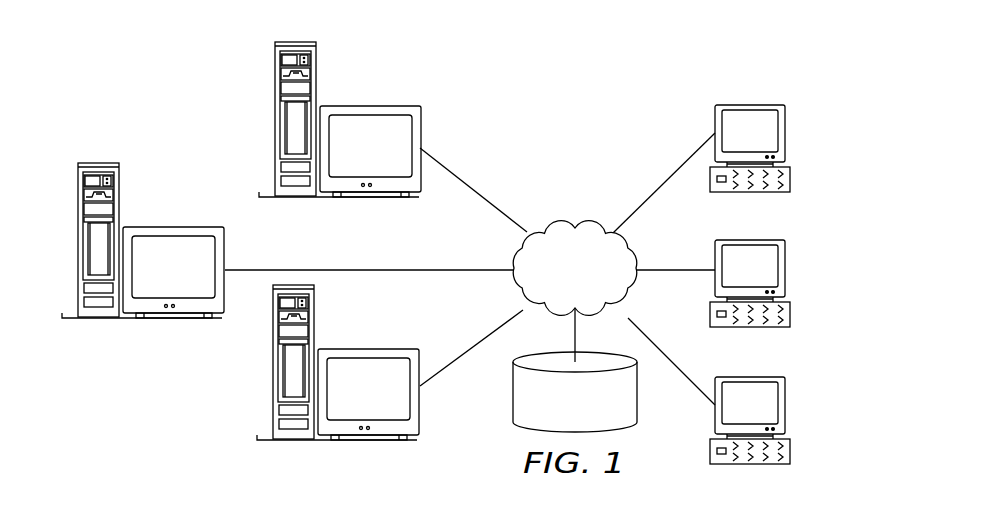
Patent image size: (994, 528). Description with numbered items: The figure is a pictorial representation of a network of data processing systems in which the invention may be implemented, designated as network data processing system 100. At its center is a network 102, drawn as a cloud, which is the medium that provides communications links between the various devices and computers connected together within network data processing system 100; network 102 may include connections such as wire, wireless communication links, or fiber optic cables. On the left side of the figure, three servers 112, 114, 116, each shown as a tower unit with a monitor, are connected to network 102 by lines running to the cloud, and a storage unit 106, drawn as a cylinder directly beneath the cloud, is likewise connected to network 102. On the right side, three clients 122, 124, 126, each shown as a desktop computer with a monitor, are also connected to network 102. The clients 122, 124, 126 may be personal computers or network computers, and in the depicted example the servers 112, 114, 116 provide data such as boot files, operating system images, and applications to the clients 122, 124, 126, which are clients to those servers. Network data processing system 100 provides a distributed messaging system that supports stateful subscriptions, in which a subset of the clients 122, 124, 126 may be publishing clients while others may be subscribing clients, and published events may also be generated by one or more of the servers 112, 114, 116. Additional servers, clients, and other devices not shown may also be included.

The network data processing system 100 is at (626, 110).
The network 102 is at (552, 227).
The storage unit 106 is at (513, 393).
The server 112 is at (273, 368).
The server 114 is at (78, 242).
The server 116 is at (275, 118).
The client 122 is at (785, 132).
The client 124 is at (785, 270).
The client 126 is at (785, 405).